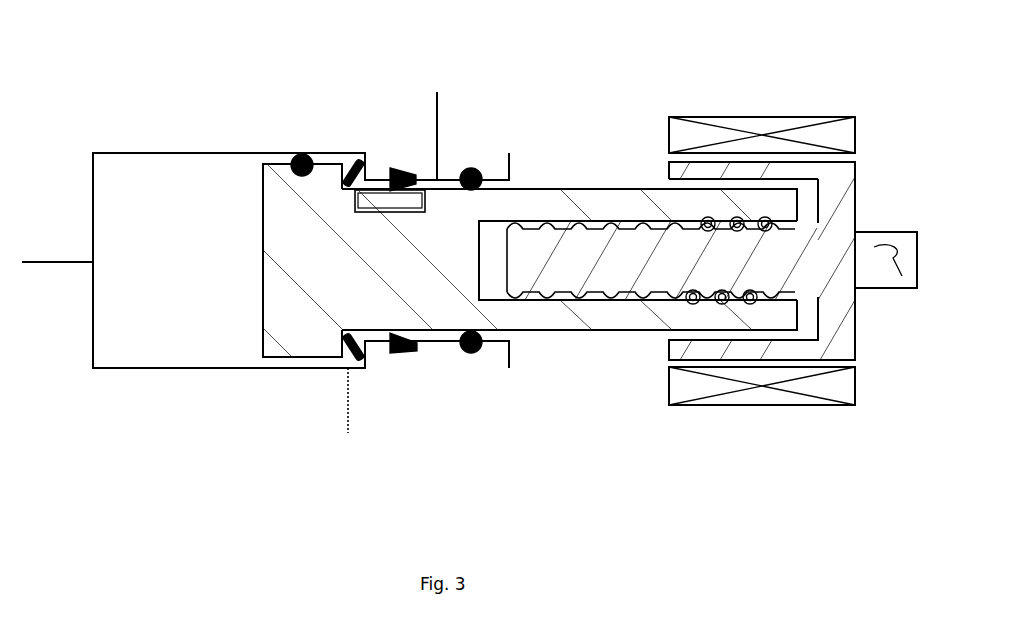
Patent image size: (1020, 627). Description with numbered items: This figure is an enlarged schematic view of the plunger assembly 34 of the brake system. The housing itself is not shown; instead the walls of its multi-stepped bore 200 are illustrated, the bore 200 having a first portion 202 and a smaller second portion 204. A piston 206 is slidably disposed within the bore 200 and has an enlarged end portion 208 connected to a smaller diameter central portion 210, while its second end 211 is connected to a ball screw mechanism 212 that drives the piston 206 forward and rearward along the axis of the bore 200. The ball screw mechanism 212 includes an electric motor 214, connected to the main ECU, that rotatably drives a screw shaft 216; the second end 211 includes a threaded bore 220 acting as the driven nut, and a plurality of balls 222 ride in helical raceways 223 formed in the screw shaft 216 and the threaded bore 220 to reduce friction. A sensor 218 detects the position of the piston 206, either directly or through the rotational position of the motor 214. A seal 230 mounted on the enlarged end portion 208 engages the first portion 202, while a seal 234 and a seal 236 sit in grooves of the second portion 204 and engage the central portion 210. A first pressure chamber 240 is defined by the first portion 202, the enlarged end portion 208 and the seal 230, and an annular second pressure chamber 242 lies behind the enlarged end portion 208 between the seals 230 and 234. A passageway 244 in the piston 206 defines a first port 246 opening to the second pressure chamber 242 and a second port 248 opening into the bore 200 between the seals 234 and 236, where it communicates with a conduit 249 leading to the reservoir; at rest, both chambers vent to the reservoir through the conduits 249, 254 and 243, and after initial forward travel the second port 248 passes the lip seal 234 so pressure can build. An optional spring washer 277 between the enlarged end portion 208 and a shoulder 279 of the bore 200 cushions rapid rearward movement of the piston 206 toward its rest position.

The plunger assembly 34 is at (860, 58).
The multi-stepped bore 200 is at (158, 368).
The first portion 202 is at (128, 153).
The second portion 204 is at (503, 331).
The piston 206 is at (512, 203).
The enlarged end portion 208 is at (312, 272).
The central portion 210 is at (543, 322).
The second end 211 is at (732, 318).
The ball screw mechanism 212 is at (799, 241).
The electric motor 214 is at (717, 125).
The screw shaft 216 is at (842, 193).
The sensor 218 is at (877, 292).
The threaded bore 220 is at (752, 300).
The balls 222 is at (702, 219).
The helical raceways 223 is at (607, 291).
The seal 230 is at (296, 156).
The seal 234 is at (417, 348).
The seal 236 is at (474, 354).
The first pressure chamber 240 is at (120, 237).
The second pressure chamber 242 is at (347, 157).
The conduit 243 is at (347, 415).
The passageway 244 is at (402, 214).
The first port 246 is at (357, 188).
The second port 248 is at (425, 190).
The conduit 249 is at (433, 97).
The conduit 254 is at (71, 263).
The spring washer 277 is at (350, 352).
The shoulder 279 is at (358, 333).